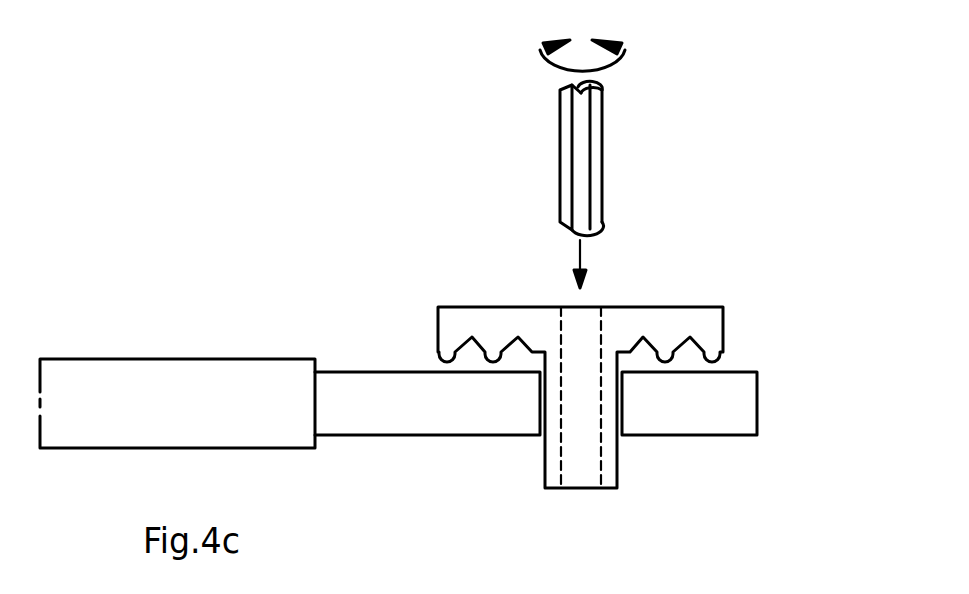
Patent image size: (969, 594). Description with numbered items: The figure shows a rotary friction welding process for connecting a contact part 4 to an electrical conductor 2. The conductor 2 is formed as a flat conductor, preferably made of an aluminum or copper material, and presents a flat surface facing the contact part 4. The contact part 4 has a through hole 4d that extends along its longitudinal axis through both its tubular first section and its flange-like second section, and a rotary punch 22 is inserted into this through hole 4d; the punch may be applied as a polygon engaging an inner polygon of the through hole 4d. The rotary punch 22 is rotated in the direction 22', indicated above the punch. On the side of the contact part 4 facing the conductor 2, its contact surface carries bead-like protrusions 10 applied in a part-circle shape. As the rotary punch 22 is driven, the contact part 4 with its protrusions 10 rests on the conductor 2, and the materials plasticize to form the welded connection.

The electrical conductor 2 is at (745, 405).
The contact part 4 is at (710, 328).
The through hole 4d is at (580, 322).
The protrusions 10 is at (450, 358).
The rotary punch 22 is at (611, 184).
The direction of rotation 22' is at (616, 48).